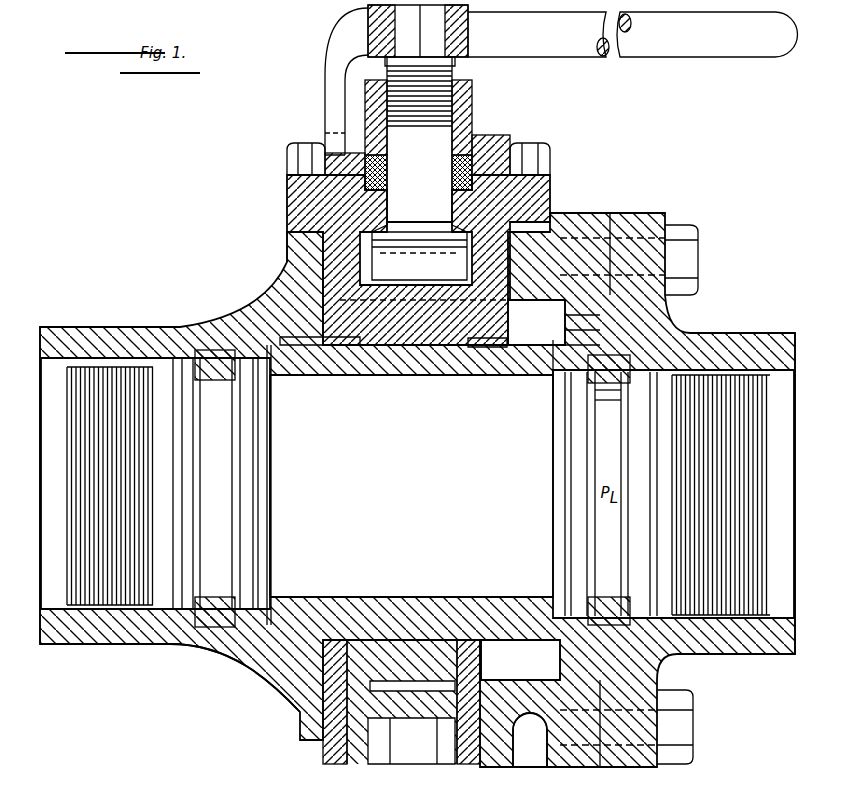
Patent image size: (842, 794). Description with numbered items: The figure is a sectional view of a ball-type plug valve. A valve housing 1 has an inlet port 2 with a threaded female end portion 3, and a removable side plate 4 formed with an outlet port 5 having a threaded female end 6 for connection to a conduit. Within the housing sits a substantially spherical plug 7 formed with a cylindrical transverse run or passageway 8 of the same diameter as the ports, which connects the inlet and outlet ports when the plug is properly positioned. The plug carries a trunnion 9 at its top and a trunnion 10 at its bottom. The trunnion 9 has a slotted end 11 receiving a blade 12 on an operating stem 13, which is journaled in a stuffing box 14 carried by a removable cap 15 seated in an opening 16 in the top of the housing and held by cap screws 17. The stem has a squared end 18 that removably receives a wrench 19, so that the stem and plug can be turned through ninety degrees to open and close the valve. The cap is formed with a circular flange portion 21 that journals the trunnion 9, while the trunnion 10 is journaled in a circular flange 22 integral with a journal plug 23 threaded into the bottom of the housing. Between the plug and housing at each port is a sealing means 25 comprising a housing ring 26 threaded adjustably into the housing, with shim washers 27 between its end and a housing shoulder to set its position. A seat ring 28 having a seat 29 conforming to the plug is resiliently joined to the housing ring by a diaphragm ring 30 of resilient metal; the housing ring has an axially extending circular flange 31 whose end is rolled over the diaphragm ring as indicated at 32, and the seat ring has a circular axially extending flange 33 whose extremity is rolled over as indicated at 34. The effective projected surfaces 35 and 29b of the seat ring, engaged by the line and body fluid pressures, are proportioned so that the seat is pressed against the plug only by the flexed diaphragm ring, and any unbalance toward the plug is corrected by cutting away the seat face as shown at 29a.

The valve housing 1 is at (262, 655).
The inlet port 2 is at (170, 575).
The threaded female end portion 3 is at (92, 605).
The removable side plate 4 is at (640, 760).
The outlet port 5 is at (640, 585).
The threaded female end 6 is at (745, 605).
The plug 7 is at (283, 692).
The transverse run or passageway 8 is at (520, 660).
The trunnion 9 is at (442, 332).
The trunnion 10 is at (420, 668).
The slotted end 11 is at (472, 268).
The blade 12 is at (407, 265).
The operating stem 13 is at (404, 165).
The stuffing box 14 is at (467, 178).
The removable cap 15 is at (548, 185).
The opening 16 is at (300, 250).
The cap screws 17 is at (536, 148).
The squared end 18 is at (432, 35).
The wrench 19 is at (718, 48).
The circular flange portion 21 is at (540, 326).
The circular flange 22 is at (478, 655).
The journal plug 23 is at (495, 762).
The sealing means 25 is at (605, 615).
The housing ring 26 is at (218, 385).
The shim washers 27 is at (668, 357).
The seat ring 28 is at (502, 368).
The seat 29 is at (545, 365).
The cut-away portion of face 29a is at (523, 412).
The effective projected surface 29b is at (450, 375).
The diaphragm ring 30 is at (608, 350).
The axially extending circular flange 31 is at (608, 402).
The rolled-over flange end 32 is at (575, 395).
The circular axially extending flange 33 is at (598, 338).
The rolled-over flange extremity 34 is at (596, 318).
The effective projected surface 35 is at (556, 370).